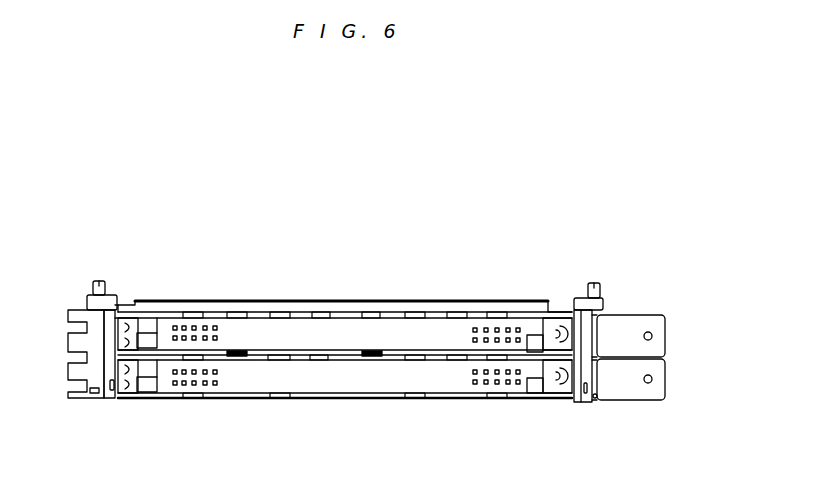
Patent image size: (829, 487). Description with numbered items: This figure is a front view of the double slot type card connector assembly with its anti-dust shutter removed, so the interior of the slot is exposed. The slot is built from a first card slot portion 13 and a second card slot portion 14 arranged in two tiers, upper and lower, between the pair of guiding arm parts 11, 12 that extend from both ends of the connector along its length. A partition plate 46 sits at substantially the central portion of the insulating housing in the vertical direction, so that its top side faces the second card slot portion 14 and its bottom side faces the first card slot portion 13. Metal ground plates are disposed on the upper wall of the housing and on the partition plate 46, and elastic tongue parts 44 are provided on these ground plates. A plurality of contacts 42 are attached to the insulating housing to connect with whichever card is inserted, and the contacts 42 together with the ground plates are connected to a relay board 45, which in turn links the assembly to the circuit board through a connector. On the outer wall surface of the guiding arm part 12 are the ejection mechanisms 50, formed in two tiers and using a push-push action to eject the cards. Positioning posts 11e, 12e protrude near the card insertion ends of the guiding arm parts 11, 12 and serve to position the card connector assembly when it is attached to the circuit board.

The guiding arm part 11 is at (93, 335).
The positioning post 11e is at (98, 281).
The guiding arm part 12 is at (592, 322).
The positioning post 12e is at (593, 283).
The first card slot portion 13 is at (413, 382).
The second card slot portion 14 is at (414, 330).
The contacts 42 is at (195, 338).
The elastic tongue parts 44 is at (373, 318).
The relay board 45 is at (527, 312).
The partition plate 46 is at (278, 352).
The ejection mechanisms 50 is at (670, 331).